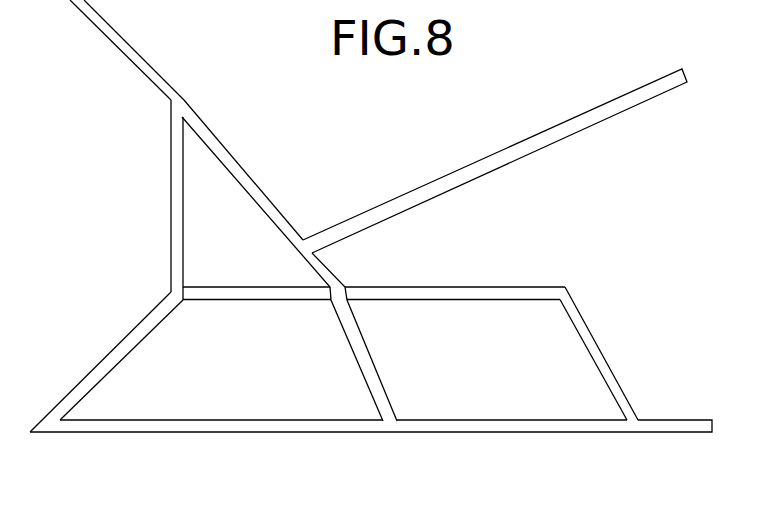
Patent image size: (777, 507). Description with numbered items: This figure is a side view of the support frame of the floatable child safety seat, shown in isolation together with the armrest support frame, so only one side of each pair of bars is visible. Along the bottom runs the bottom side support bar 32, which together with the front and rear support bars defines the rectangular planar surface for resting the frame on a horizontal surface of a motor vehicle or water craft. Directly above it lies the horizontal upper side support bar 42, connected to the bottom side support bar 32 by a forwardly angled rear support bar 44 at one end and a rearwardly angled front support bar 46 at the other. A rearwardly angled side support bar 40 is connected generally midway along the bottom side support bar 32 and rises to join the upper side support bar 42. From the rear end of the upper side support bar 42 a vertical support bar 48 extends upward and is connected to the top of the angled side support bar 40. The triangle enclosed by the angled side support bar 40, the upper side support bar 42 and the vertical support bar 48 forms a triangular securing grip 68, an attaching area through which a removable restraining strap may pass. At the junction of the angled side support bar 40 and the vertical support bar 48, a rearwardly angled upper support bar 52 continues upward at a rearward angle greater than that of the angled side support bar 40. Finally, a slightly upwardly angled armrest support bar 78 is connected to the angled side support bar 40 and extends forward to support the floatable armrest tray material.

The bottom side support bar 32 is at (307, 426).
The rearwardly angled side support bar 40 is at (262, 192).
The upper support side bar 42 is at (418, 297).
The forwardly angled rear support bar 44 is at (110, 365).
The rearwardly angled front support bar 46 is at (610, 370).
The vertical support bar 48 is at (172, 207).
The rearwardly angled upper support bar 52 is at (120, 45).
The triangular securing grip 68 is at (250, 251).
The armrest support bar 78 is at (563, 133).